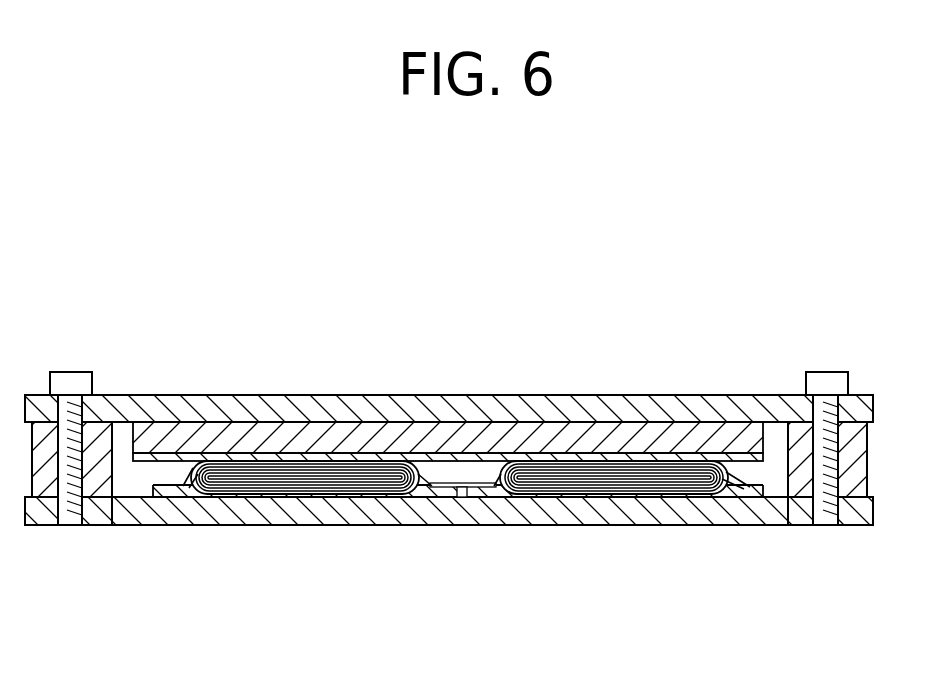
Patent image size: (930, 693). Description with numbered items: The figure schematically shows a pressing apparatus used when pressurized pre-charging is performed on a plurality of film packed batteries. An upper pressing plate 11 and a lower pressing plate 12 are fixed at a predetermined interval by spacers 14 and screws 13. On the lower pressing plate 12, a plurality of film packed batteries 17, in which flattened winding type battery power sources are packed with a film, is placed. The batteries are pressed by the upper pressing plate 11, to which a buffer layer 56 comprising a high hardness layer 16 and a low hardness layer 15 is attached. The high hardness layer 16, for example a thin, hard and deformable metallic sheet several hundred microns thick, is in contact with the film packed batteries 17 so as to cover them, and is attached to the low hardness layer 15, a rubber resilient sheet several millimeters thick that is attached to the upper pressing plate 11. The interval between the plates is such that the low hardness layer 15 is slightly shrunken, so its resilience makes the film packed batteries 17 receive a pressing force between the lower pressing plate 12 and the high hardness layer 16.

The upper pressing plate 11 is at (452, 405).
The lower pressing plate 12 is at (352, 515).
The screw 13 is at (63, 390).
The spacer 14 is at (97, 488).
The low hardness layer 15 is at (650, 440).
The high hardness layer 16 is at (690, 458).
The film packed battery 17 is at (252, 480).
The buffer layer 56 is at (448, 377).